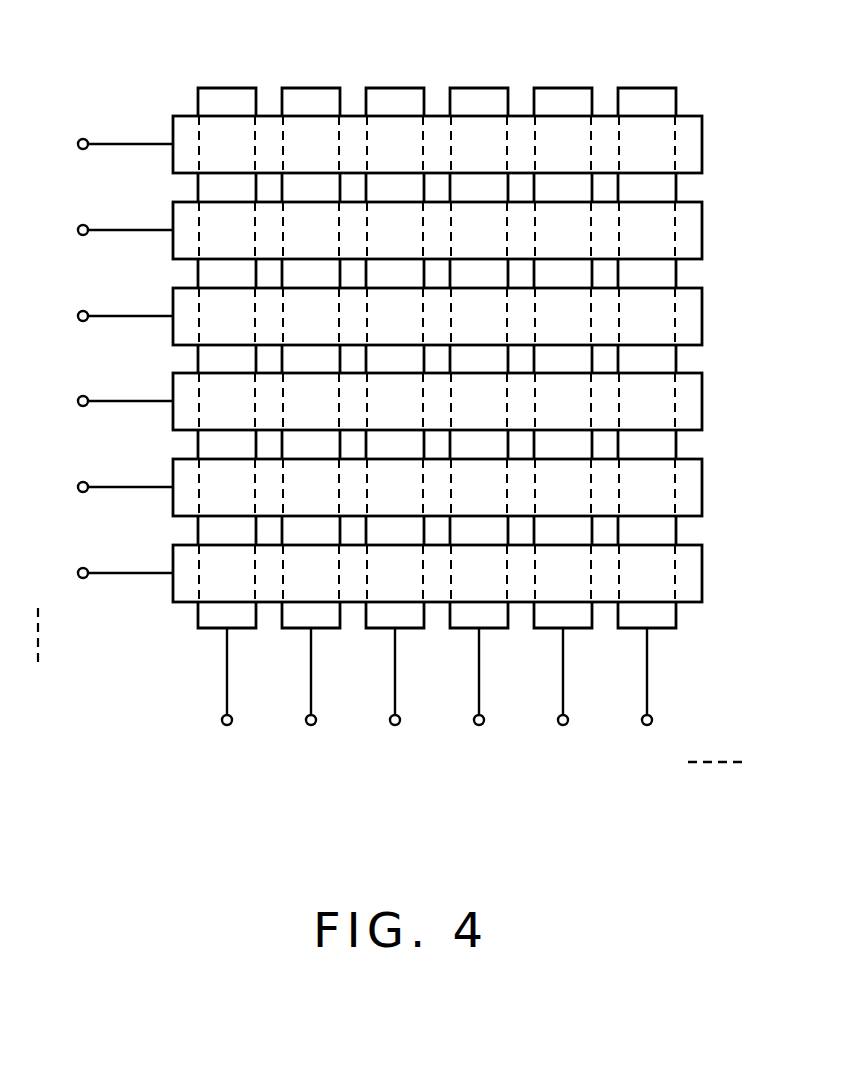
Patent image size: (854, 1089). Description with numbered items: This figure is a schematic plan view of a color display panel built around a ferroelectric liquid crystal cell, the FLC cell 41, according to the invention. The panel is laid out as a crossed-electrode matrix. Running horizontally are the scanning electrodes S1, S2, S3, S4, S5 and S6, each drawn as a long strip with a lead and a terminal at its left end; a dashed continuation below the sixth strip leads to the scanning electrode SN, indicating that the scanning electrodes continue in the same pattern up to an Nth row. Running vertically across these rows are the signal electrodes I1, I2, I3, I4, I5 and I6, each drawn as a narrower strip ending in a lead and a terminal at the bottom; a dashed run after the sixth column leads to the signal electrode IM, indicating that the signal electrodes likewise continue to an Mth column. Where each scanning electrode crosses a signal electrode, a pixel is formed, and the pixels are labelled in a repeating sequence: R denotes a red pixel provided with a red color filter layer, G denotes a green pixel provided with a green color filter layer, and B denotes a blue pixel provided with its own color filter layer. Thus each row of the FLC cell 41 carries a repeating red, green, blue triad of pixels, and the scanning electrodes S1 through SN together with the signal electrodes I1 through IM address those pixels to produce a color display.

The FLC cell 41 is at (433, 84).
The scanning electrode S1 is at (101, 144).
The scanning electrode S2 is at (101, 230).
The scanning electrode S3 is at (101, 316).
The scanning electrode S4 is at (101, 401).
The scanning electrode S5 is at (101, 487).
The scanning electrode S6 is at (101, 573).
The scanning electrode SN is at (43, 661).
The signal electrode I1 is at (227, 704).
The signal electrode I2 is at (310, 704).
The signal electrode I3 is at (395, 704).
The signal electrode I4 is at (478, 704).
The signal electrode I5 is at (562, 704).
The signal electrode I6 is at (644, 704).
The signal electrode IM is at (738, 763).